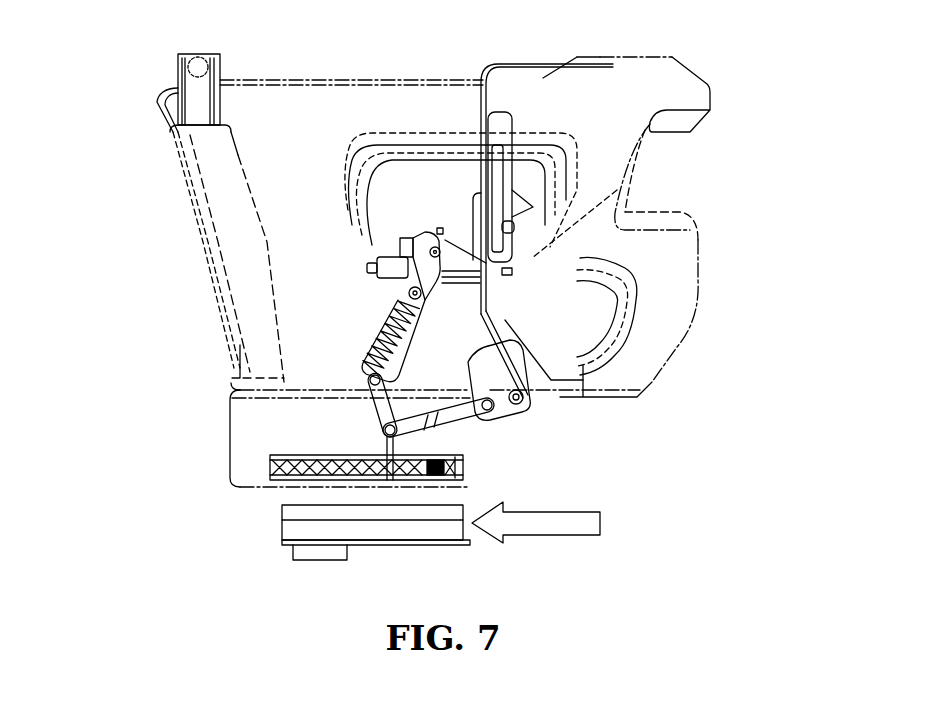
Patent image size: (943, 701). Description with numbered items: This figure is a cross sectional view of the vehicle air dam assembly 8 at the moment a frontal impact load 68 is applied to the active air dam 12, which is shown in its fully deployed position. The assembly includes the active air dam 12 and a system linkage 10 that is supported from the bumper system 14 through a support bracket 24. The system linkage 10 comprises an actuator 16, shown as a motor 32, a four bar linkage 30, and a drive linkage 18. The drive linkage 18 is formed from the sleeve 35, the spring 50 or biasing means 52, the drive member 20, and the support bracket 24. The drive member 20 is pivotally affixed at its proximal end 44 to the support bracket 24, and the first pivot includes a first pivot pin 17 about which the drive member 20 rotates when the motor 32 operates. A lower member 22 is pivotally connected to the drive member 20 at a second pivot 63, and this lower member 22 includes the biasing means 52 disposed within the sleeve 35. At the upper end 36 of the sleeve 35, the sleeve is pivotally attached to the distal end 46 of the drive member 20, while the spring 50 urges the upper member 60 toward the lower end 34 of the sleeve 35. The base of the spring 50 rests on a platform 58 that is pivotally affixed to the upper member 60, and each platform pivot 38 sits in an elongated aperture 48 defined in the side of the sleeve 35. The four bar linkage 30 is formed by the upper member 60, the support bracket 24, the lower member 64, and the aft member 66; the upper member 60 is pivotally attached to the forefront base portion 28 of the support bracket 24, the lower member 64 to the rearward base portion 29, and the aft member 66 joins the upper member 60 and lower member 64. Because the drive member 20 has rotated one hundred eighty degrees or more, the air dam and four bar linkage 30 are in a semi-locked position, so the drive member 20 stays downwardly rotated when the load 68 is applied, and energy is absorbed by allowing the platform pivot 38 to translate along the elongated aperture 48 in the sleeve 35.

The vehicle air dam assembly 8 is at (142, 311).
The system linkage 10 is at (348, 255).
The active air dam 12 is at (300, 525).
The bumper system 14 is at (507, 158).
The actuator 16 is at (346, 165).
The first pivot pin 17 is at (441, 232).
The drive linkage 18 is at (354, 273).
The drive member 20 is at (412, 237).
The lower member 22 is at (372, 340).
The support bracket 24 is at (512, 262).
The forefront base portion 28 is at (543, 430).
The rearward base portion 29 is at (480, 427).
The four bar linkage 30 is at (457, 421).
The motor 32 is at (402, 250).
The lower end 34 is at (362, 372).
The sleeve 35 is at (383, 308).
The upper end 36 is at (398, 284).
The platform pivot 38 is at (398, 376).
The proximal end 44 is at (436, 246).
The distal end 46 is at (445, 308).
The elongated aperture 48 is at (440, 348).
The spring 50 is at (245, 383).
The biasing means 52 is at (365, 348).
The platform 58 is at (376, 386).
The upper member 60 is at (548, 393).
The second pivot 63 is at (379, 255).
The lower member 64 is at (420, 462).
The aft member 66 is at (370, 410).
The load 68 is at (552, 537).